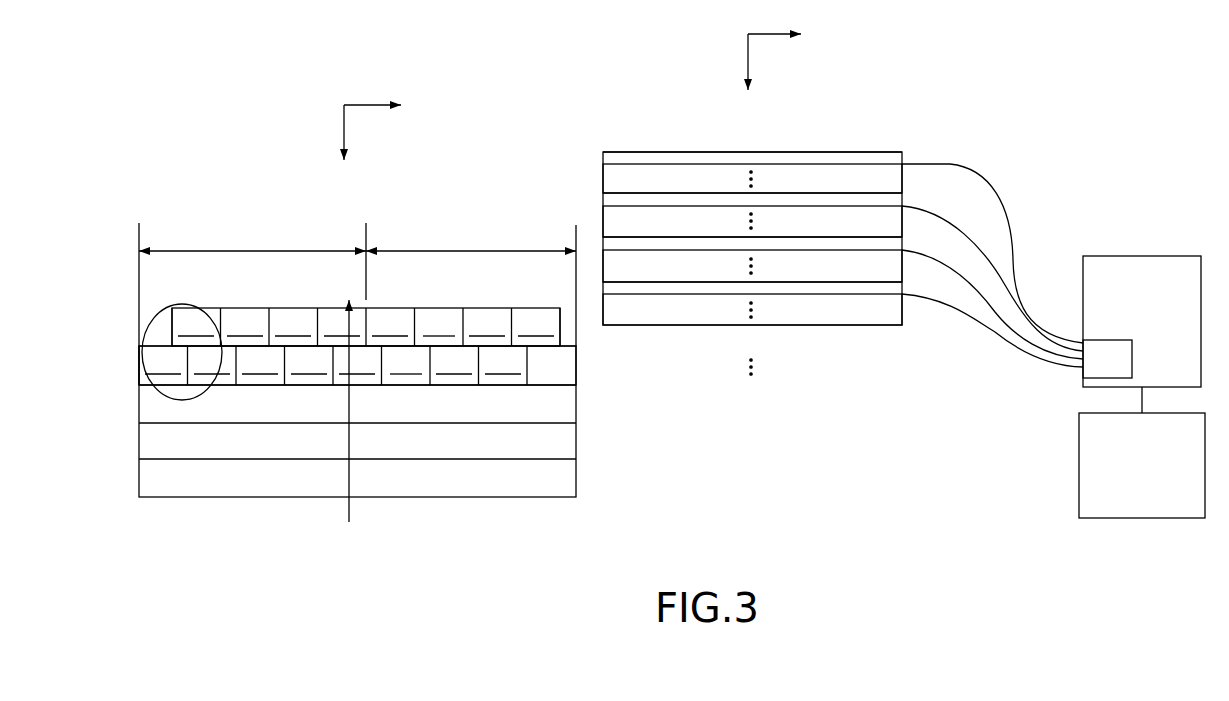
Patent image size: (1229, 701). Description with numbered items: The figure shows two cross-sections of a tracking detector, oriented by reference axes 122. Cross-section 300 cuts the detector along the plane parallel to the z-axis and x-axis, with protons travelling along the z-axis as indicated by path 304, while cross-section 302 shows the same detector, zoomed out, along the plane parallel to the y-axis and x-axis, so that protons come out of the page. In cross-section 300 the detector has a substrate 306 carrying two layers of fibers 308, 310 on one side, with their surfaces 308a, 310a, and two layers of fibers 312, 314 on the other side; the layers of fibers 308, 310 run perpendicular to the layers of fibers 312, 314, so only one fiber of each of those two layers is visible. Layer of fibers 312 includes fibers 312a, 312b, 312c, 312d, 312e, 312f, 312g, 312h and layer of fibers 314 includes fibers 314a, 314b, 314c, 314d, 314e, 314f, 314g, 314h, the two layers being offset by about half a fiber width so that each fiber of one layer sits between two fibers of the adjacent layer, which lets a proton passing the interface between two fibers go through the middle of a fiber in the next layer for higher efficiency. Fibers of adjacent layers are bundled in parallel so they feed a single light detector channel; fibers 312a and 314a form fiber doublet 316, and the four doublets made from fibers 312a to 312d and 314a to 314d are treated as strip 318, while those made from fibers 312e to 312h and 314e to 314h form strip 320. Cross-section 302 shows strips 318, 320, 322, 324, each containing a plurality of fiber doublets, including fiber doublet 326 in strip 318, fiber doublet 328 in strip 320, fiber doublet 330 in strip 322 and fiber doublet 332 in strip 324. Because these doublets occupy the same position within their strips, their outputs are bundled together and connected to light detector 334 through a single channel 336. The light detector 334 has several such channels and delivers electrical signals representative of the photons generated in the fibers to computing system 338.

The reference axes 122 is at (344, 133).
The cross-section 300 is at (492, 520).
The cross-section 302 is at (892, 344).
The path 304 is at (349, 510).
The substrate 306 is at (563, 414).
The layer of fibers 308 is at (133, 440).
The cladding layer surface 308a is at (563, 451).
The layer of fibers 310 is at (133, 483).
The substrate surface 310a is at (563, 489).
The layer of fibers 312 is at (317, 327).
The fiber 312a is at (193, 327).
The fiber 312b is at (243, 327).
The fiber 312c is at (290, 327).
The fiber 312d is at (340, 327).
The fiber 312e is at (387, 327).
The fiber 312f is at (436, 327).
The fiber 312g is at (484, 327).
The fiber 312h is at (536, 327).
The layer of fibers 314 is at (312, 365).
The fiber 314a is at (160, 365).
The fiber 314b is at (210, 365).
The fiber 314c is at (257, 365).
The fiber 314d is at (307, 365).
The fiber 314e is at (354, 365).
The fiber 314f is at (403, 365).
The fiber 314g is at (451, 365).
The fiber 314h is at (503, 365).
The fiber doublet 316 is at (220, 308).
The strip 318 is at (250, 250).
The strip 320 is at (432, 250).
The strip 322 is at (642, 275).
The strip 324 is at (642, 319).
The fiber doublet 326 is at (603, 153).
The fiber doublet 328 is at (603, 197).
The fiber doublet 330 is at (603, 250).
The fiber doublet 332 is at (603, 297).
The light detector 334 is at (1128, 333).
The channel 336 is at (1093, 368).
The computing system 338 is at (1128, 503).